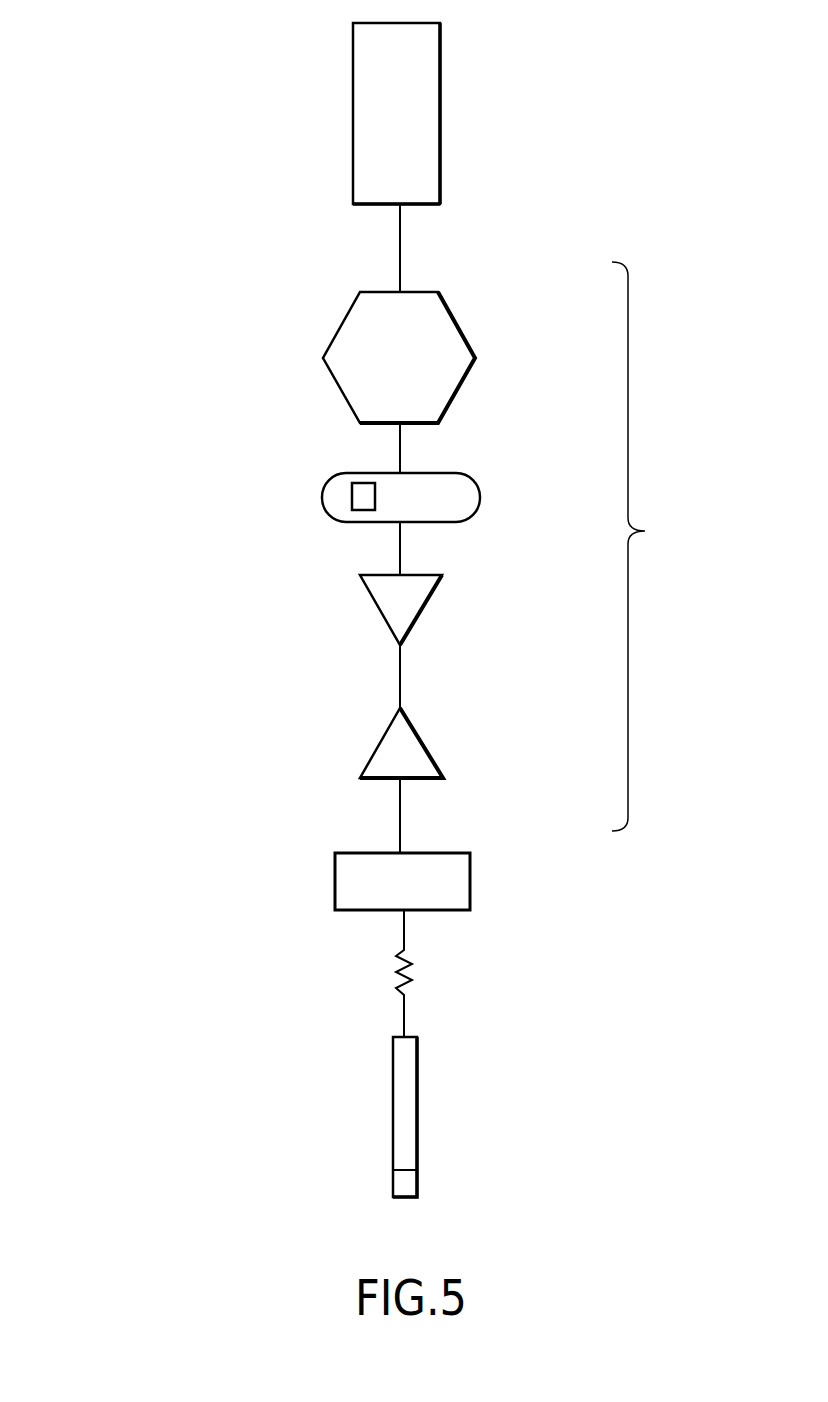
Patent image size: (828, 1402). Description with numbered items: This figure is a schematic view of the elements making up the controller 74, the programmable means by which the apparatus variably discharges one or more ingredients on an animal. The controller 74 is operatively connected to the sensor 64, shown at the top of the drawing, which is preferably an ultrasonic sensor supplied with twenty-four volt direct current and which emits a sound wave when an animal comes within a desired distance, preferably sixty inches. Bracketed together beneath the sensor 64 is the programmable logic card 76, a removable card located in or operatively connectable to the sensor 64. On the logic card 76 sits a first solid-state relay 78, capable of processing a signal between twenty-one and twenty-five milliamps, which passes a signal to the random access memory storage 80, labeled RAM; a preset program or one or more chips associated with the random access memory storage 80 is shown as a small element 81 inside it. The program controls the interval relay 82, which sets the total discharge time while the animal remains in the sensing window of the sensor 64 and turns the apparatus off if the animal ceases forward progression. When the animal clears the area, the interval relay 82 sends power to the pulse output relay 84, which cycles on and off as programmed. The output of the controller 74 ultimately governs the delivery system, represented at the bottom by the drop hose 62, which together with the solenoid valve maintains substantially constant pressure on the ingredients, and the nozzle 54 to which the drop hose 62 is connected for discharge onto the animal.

The sensor 64 is at (440, 70).
The first solid-state relay 78 is at (323, 362).
The random access memory storage 80 is at (322, 494).
The memory cell 81 is at (363, 490).
The interval relay 82 is at (428, 600).
The pulse output relay 84 is at (420, 740).
The drop hose 62 is at (417, 1112).
The nozzle 54 is at (417, 1180).
The controller 74 is at (182, 254).
The programmable logic card 76 is at (650, 546).